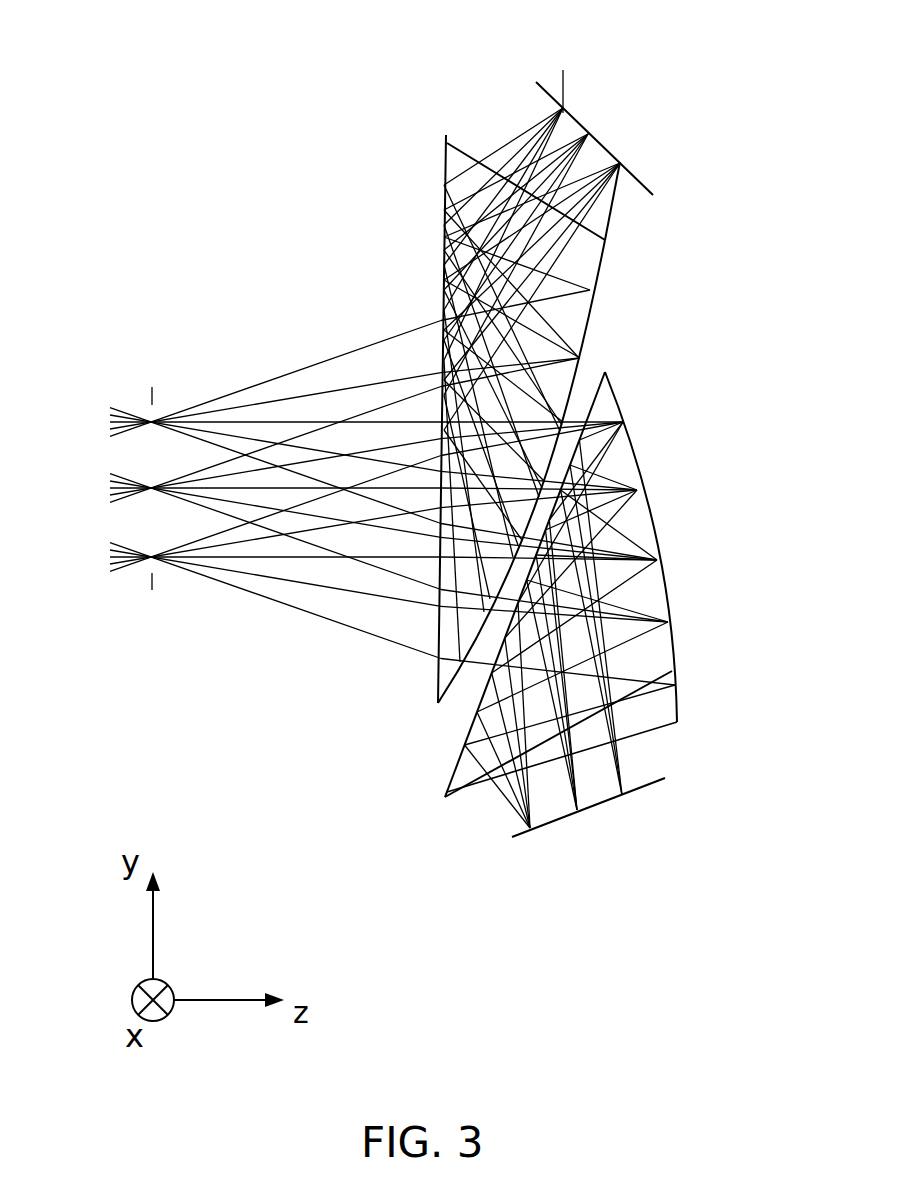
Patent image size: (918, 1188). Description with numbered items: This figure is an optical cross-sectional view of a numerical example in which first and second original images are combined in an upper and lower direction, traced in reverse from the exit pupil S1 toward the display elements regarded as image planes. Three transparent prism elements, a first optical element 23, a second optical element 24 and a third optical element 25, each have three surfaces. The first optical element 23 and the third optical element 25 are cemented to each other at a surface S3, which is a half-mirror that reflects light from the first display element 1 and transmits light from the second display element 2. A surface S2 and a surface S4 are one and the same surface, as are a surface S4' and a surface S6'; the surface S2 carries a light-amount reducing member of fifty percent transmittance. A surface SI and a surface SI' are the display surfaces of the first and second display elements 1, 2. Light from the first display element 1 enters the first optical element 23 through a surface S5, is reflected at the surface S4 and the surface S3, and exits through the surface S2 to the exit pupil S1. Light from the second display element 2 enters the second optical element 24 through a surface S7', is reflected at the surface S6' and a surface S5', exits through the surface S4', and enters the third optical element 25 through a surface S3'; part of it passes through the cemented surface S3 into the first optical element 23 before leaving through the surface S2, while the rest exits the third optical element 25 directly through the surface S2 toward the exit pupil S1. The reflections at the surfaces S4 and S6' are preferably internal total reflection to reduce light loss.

The first display element 1 is at (594, 135).
The second display element 2 is at (588, 841).
The first optical element 23 is at (485, 410).
The second optical element 24 is at (546, 636).
The third optical element 25 is at (479, 476).
The exit pupil S1 is at (153, 592).
The surface S2 is at (402, 419).
The surface S3 is at (479, 473).
The surface S4 is at (402, 419).
The surface S5 is at (564, 193).
The surface SI is at (594, 112).
The surface S3' is at (446, 473).
The surface S4' is at (478, 603).
The surface S5' is at (672, 547).
The surface S6' is at (478, 603).
The surface S7' is at (552, 786).
The surface SI' is at (588, 841).